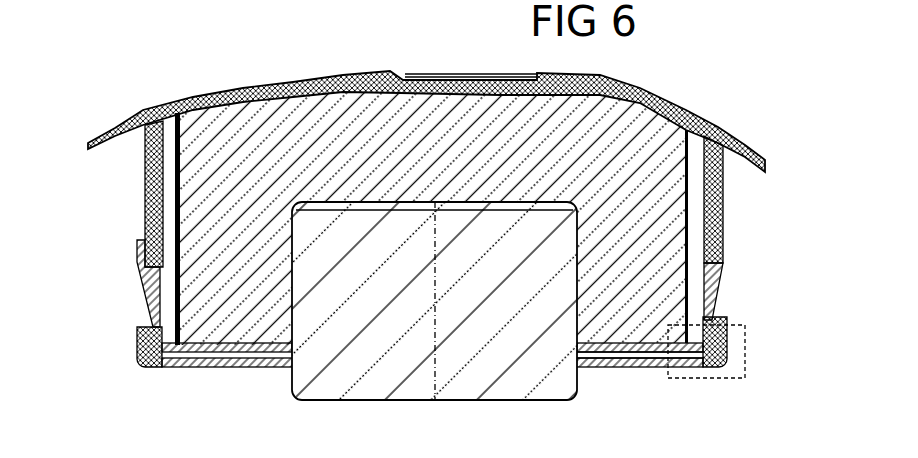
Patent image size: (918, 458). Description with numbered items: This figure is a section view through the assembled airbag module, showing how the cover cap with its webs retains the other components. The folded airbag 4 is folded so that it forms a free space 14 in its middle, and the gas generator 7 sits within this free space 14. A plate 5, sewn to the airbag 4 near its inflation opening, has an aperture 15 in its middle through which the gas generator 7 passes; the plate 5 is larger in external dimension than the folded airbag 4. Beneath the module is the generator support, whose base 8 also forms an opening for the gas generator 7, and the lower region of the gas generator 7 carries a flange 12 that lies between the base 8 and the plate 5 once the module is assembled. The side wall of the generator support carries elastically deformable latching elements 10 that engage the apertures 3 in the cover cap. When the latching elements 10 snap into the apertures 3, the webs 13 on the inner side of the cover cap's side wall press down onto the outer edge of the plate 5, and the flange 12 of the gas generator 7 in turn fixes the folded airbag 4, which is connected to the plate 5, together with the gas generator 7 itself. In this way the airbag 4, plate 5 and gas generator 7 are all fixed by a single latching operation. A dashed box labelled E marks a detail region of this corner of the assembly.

The apertures 3 is at (157, 277).
The folded airbag 4 is at (207, 210).
The plate 5 is at (632, 347).
The gas generator 7 is at (323, 240).
The base 8 is at (603, 370).
The latching elements 10 is at (720, 317).
The flange 12 is at (585, 365).
The webs 13 is at (167, 232).
The free space 14 is at (347, 200).
The aperture 15 is at (293, 363).
The detail region E is at (735, 378).